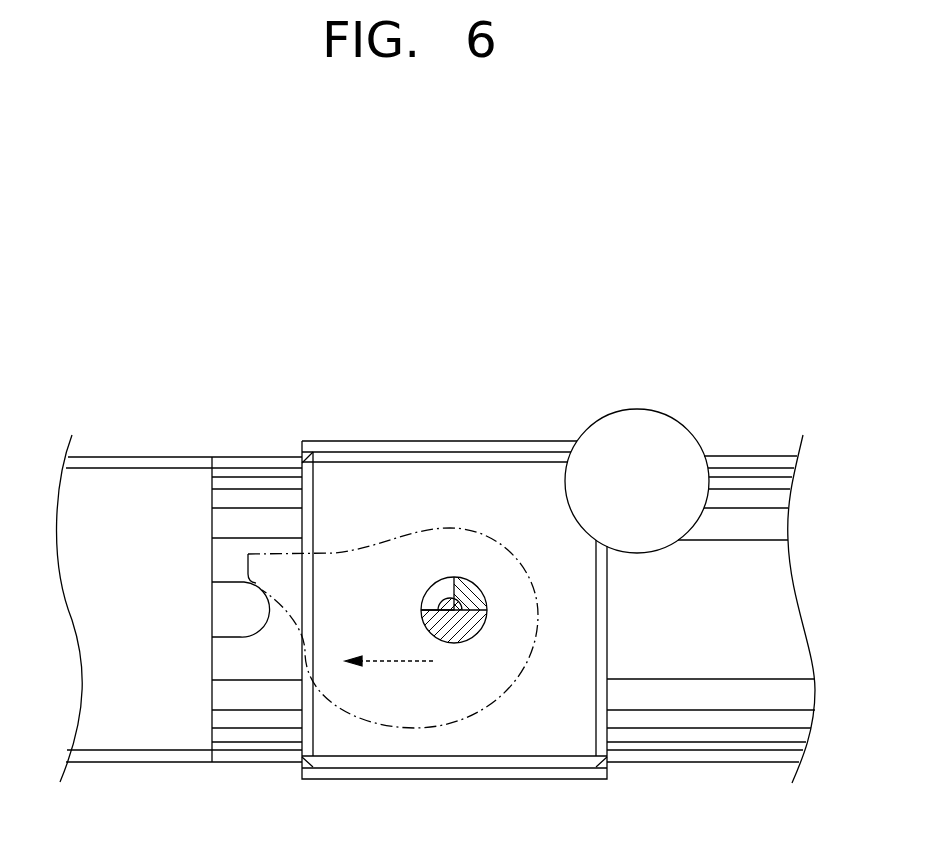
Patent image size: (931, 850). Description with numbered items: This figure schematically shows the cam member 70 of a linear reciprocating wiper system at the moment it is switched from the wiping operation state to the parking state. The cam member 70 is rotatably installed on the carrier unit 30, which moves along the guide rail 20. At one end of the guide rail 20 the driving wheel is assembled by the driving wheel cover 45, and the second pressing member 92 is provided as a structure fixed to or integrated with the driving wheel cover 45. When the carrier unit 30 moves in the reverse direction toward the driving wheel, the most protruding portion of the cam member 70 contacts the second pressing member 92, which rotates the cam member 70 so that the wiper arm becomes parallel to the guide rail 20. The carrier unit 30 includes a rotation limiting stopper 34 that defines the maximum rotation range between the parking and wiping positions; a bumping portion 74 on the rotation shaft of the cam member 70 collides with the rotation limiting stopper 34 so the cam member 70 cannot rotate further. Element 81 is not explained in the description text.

The guide rail 20 is at (723, 763).
The carrier unit 30 is at (543, 738).
The rotation limiting stopper 34 is at (448, 578).
The driving wheel cover 45 is at (147, 737).
The cam member 70 is at (418, 713).
The bumping portion 74 is at (421, 602).
The motor 81 is at (641, 420).
The second pressing member 92 is at (243, 615).